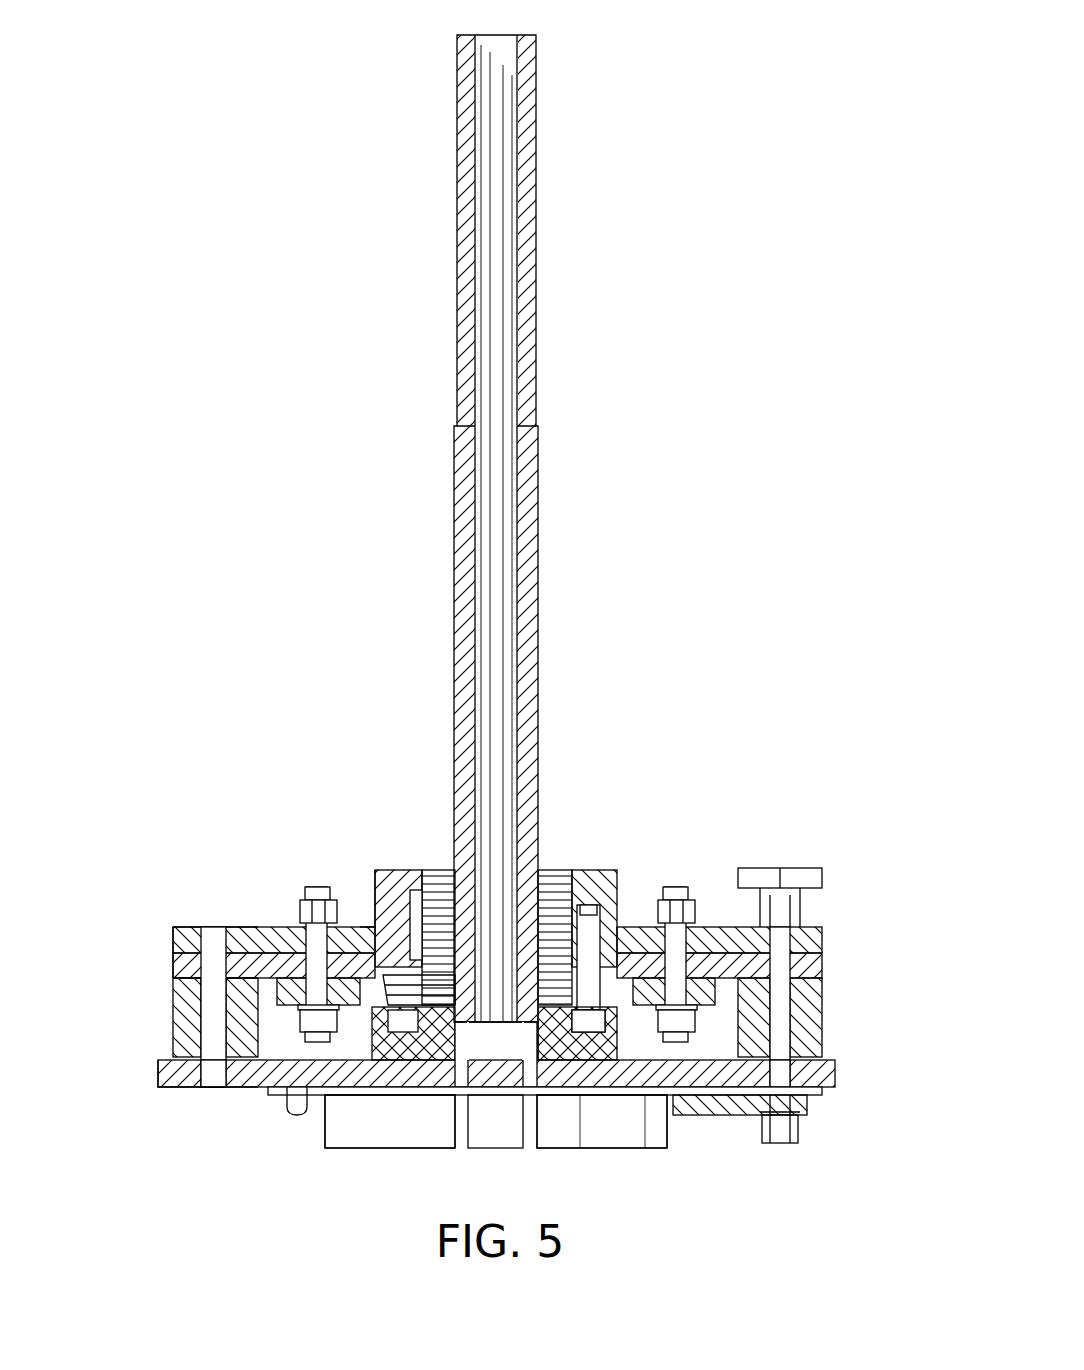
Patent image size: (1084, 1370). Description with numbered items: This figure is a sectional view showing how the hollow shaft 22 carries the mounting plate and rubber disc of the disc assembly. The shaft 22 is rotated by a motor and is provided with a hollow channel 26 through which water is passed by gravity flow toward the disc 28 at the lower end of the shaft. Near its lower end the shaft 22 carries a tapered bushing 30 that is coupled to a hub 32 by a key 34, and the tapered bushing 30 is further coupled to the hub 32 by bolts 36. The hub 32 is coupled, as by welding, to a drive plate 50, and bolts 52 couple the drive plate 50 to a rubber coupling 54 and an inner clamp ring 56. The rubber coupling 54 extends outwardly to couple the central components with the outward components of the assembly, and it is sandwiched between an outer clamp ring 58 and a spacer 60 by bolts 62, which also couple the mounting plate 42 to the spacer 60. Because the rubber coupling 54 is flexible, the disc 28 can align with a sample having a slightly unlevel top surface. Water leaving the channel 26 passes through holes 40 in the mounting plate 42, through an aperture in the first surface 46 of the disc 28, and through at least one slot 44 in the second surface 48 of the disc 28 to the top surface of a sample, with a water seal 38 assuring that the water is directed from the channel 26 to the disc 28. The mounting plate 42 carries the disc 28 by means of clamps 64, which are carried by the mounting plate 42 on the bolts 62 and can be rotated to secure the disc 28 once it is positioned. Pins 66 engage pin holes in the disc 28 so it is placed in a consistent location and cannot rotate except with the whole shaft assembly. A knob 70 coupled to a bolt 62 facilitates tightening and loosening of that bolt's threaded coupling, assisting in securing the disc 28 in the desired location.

The shaft 22 is at (537, 100).
The hollow channel 26 is at (497, 225).
The disc 28 is at (615, 1127).
The tapered bushing 30 is at (545, 878).
The hub 32 is at (598, 880).
The key 34 is at (415, 880).
The bolts 36 is at (600, 922).
The water seal 38 is at (365, 1012).
The holes 40 is at (530, 1075).
The mounting plate 42 is at (245, 1085).
The slot 44 is at (458, 1140).
The first surface 46 is at (620, 1090).
The second surface 48 is at (590, 1147).
The drive plate 50 is at (343, 920).
The bolts 52 is at (677, 880).
The rubber coupling 54 is at (172, 963).
The inner clamp ring 56 is at (178, 1062).
The outer clamp ring 58 is at (248, 925).
The spacer 60 is at (172, 1045).
The bolts 62 is at (772, 1022).
The clamps 64 is at (740, 1115).
The pins 66 is at (285, 1112).
The knob 70 is at (815, 868).